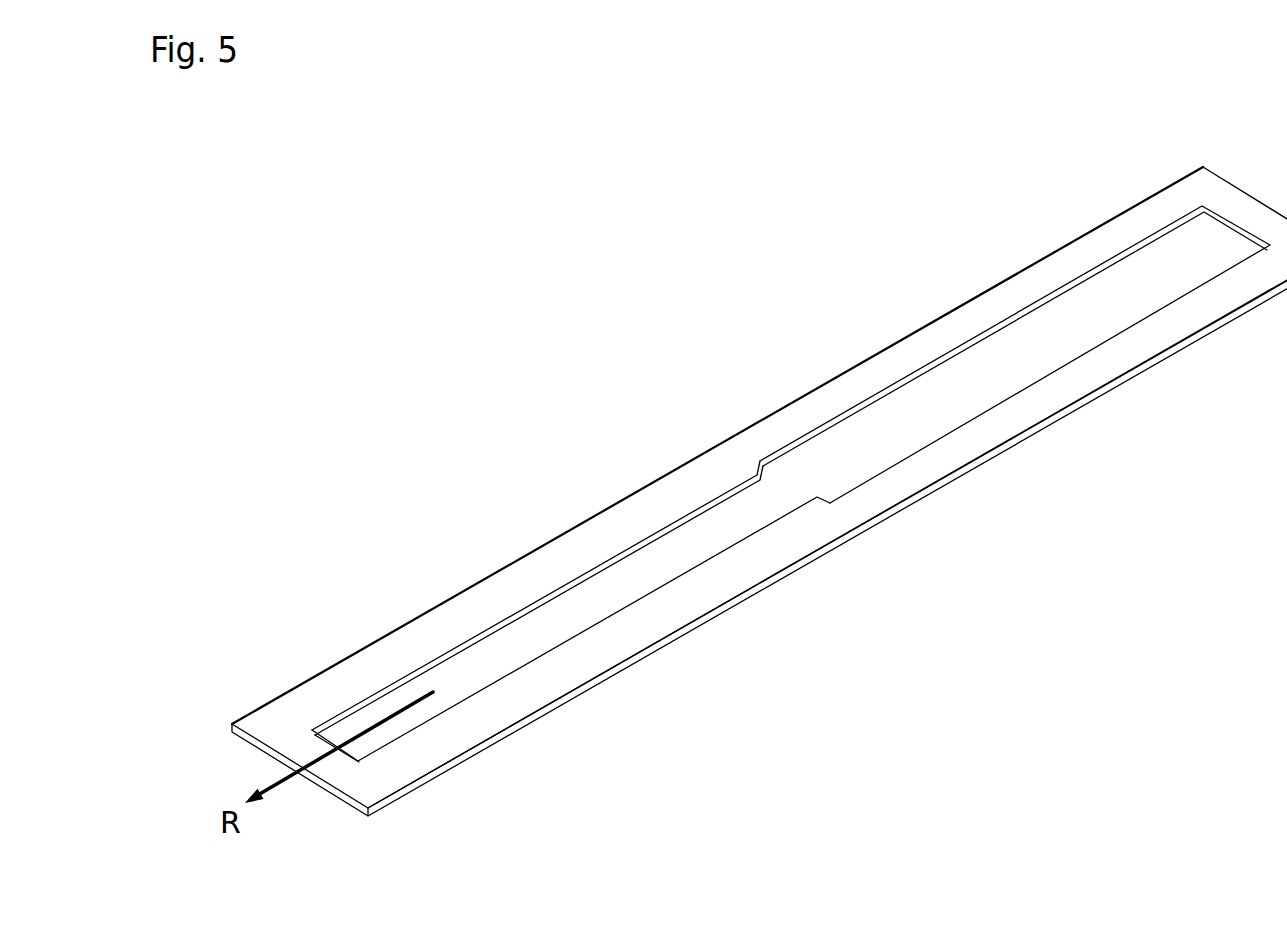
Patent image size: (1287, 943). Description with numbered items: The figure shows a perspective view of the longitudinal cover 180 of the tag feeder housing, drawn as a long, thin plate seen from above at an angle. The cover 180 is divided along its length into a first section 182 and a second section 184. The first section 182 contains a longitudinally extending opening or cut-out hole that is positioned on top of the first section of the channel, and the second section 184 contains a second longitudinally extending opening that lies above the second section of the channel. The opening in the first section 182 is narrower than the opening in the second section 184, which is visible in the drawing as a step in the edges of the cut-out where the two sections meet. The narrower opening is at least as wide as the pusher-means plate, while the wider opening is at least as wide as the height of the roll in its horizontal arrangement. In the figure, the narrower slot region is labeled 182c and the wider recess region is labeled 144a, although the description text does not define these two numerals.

The longitudinal cover 180 is at (604, 505).
The first section 182 is at (687, 603).
The slot 182c is at (465, 685).
The recess 144a is at (896, 427).
The second section 184 is at (962, 450).